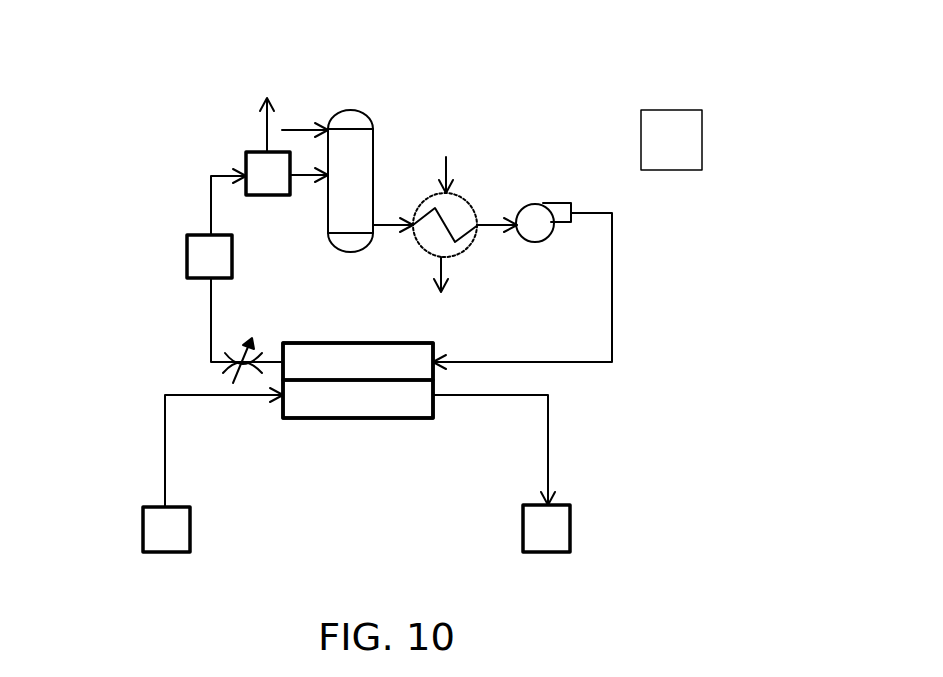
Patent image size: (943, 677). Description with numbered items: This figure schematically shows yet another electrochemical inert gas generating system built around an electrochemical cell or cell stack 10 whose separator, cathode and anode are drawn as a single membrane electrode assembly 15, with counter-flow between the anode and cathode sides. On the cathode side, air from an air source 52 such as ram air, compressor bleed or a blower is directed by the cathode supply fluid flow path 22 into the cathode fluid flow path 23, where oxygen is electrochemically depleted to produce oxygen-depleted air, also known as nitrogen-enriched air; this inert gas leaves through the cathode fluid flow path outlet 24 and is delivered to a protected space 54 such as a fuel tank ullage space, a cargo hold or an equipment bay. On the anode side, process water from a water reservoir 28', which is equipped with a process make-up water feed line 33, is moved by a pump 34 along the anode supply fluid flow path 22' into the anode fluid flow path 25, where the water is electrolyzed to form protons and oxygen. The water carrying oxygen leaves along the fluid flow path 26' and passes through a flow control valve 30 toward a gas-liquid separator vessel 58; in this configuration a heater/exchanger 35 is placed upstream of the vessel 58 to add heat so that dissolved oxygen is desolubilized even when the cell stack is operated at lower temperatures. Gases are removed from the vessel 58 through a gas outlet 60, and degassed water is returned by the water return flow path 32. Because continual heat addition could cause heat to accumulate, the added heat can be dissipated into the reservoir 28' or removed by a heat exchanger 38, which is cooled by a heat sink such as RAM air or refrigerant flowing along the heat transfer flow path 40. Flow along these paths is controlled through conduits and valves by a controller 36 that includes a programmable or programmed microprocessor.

The electrochemical cell or cell stack 10 is at (328, 418).
The membrane electrode assembly 15 is at (338, 380).
The cathode supply fluid flow path 22 is at (224, 447).
The anode supply fluid flow path 22' is at (583, 291).
The cathode fluid flow path 23 is at (358, 397).
The cathode fluid flow path outlet 24 is at (463, 396).
The anode fluid flow path 25 is at (390, 365).
The fluid flow path 26' is at (257, 320).
The water reservoir 28' is at (396, 164).
The flow control valve 30 is at (238, 358).
The water return flow path 32 is at (305, 177).
The process make-up water feed line 33 is at (302, 130).
The pump 34 is at (556, 203).
The heater/exchanger 35 is at (187, 262).
The controller 36 is at (702, 137).
The heat exchanger 38 is at (465, 248).
The heat transfer flow path 40 is at (447, 167).
The air source 52 is at (143, 523).
The protected space 54 is at (570, 520).
The gas-liquid separator 58 is at (267, 195).
The gas outlet 60 is at (268, 128).